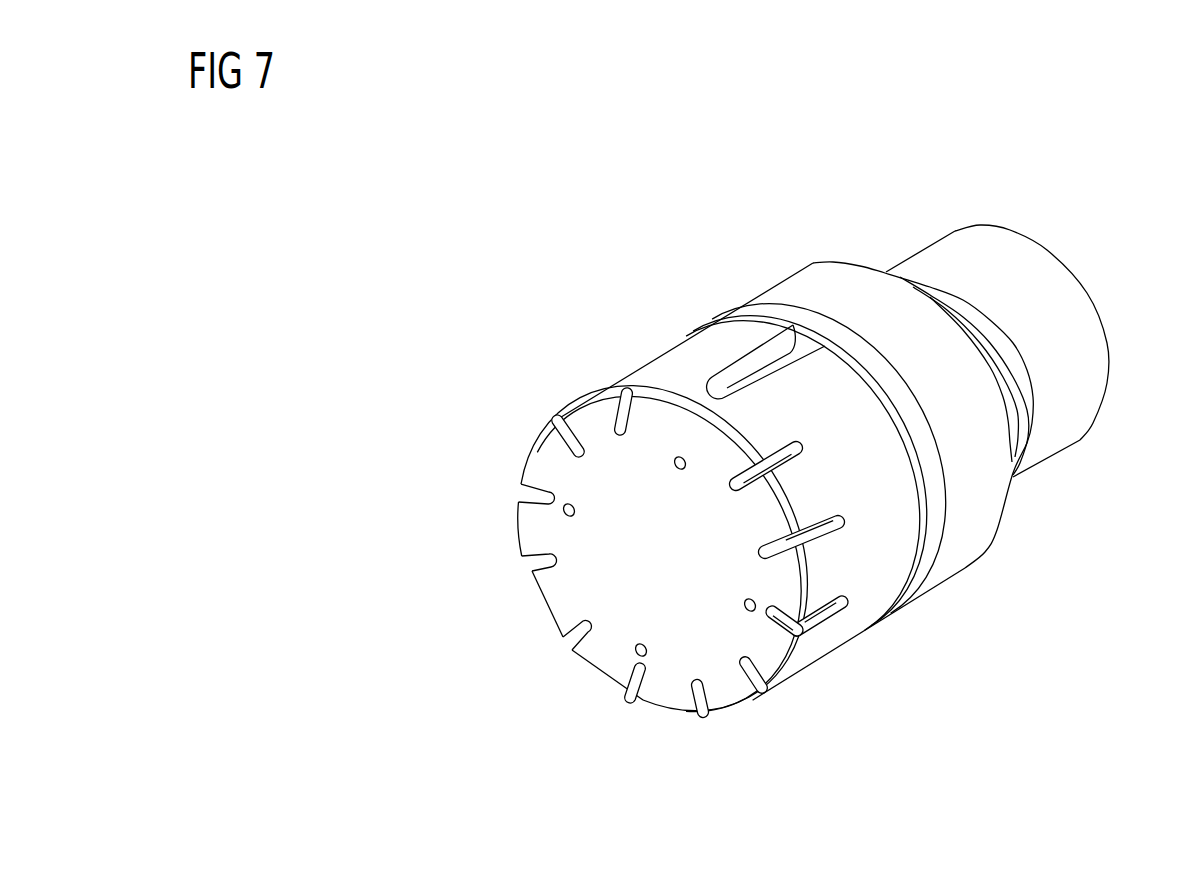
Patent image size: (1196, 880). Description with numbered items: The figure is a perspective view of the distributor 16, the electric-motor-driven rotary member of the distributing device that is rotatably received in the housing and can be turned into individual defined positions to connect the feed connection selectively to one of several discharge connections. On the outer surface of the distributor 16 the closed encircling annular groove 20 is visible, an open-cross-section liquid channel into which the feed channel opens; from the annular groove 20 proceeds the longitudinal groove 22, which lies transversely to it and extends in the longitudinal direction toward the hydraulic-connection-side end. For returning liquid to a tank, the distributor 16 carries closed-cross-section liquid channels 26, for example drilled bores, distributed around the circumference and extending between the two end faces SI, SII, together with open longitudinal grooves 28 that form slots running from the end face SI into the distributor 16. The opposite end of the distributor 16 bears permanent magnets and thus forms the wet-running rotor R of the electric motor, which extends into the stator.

The distributor 16 is at (578, 210).
The annular groove 20 is at (749, 316).
The longitudinal groove 22 is at (770, 368).
The liquid channels 26 is at (564, 512).
The longitudinal grooves 28 is at (617, 396).
The rotor R is at (1047, 297).
The end face SI is at (626, 565).
The end face SII is at (1034, 500).